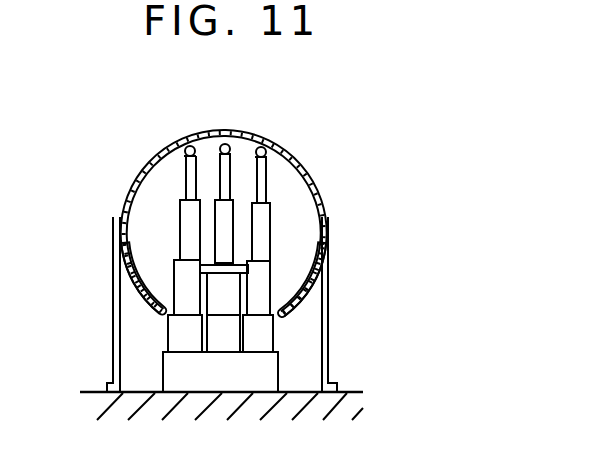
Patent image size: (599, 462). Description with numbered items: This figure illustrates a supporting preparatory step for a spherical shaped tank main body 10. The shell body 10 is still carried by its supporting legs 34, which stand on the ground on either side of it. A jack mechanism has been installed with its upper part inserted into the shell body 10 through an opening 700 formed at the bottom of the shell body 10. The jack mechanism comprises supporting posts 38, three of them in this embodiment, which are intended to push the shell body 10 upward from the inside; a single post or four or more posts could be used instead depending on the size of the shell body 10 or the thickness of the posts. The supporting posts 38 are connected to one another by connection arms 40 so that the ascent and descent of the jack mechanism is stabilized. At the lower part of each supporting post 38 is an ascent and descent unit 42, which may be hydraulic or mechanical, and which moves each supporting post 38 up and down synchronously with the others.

The spherical shaped tank main body 10 is at (306, 172).
The supporting legs 34 is at (114, 250).
The supporting posts 38 is at (184, 180).
The connection arms 40 is at (243, 263).
The ascent and descent unit 42 is at (168, 337).
The opening 700 is at (157, 316).